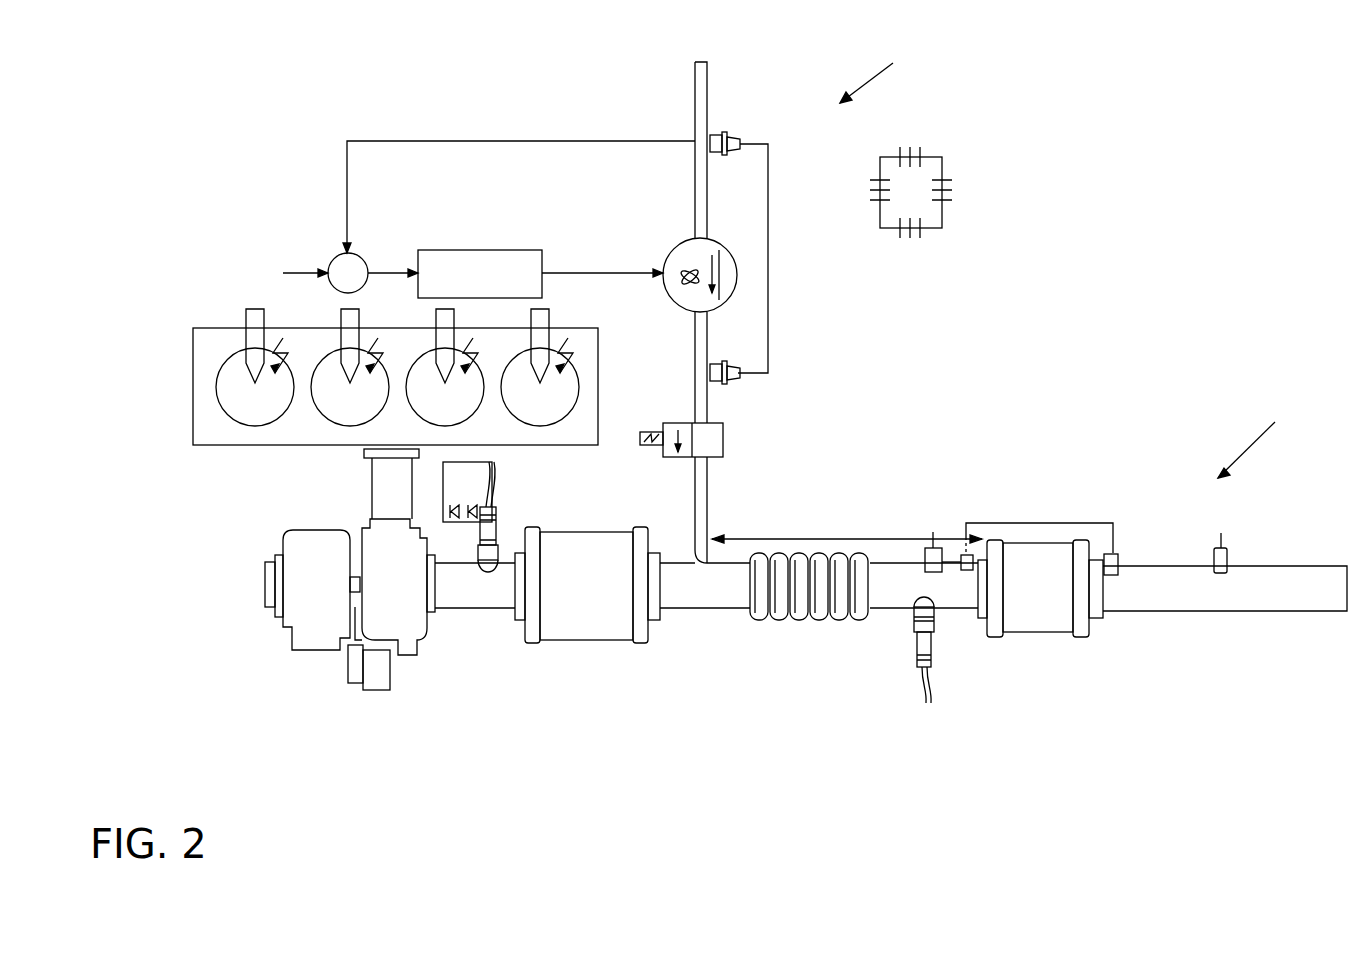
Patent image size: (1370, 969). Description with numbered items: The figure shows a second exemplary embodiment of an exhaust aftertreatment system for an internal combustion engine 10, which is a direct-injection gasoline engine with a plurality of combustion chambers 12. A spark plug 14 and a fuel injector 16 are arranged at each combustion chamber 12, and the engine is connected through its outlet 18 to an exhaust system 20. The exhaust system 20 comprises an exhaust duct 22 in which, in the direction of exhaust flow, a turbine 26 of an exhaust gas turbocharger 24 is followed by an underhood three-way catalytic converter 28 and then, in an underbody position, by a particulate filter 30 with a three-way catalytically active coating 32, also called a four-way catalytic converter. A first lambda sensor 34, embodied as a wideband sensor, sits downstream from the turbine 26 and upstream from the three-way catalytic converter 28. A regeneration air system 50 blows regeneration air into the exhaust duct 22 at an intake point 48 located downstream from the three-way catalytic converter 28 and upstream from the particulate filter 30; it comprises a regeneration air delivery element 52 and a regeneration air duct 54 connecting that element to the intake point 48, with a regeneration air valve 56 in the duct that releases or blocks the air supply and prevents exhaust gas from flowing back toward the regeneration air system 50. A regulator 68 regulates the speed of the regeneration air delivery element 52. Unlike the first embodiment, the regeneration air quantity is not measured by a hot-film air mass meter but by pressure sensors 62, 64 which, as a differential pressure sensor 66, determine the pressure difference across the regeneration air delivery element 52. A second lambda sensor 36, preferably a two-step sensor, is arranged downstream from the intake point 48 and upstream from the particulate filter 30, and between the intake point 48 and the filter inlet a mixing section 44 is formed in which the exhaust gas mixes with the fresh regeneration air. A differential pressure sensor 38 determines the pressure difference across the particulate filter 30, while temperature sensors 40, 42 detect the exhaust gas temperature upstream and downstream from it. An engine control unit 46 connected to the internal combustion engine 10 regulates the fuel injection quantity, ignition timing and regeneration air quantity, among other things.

The internal combustion engine 10 is at (193, 390).
The combustion chamber 12 is at (242, 422).
The spark plug 14 is at (283, 338).
The fuel injector 16 is at (253, 342).
The outlet 18 is at (392, 448).
The exhaust system 20 is at (1225, 506).
The exhaust duct 22 is at (466, 597).
The exhaust gas turbocharger 24 is at (357, 693).
The turbine 26 is at (393, 623).
The three-way catalytic converter 28 is at (582, 620).
The particulate filter 30 is at (1020, 623).
The three-way catalytically active coating 32 is at (1052, 555).
The first lambda sensor 34 is at (495, 532).
The second lambda sensor 36 is at (918, 652).
The differential pressure sensor 38 is at (1117, 555).
The temperature sensor 40 is at (933, 562).
The temperature sensor 42 is at (1227, 552).
The mixing section 44 is at (847, 567).
The engine control unit 46 is at (932, 165).
The intake point 48 is at (705, 563).
The regeneration air system 50 is at (887, 70).
The regeneration air delivery element 52 is at (733, 263).
The regeneration air duct 54 is at (706, 343).
The regeneration air valve 56 is at (723, 443).
The pressure sensor 62 is at (730, 137).
The pressure sensor 64 is at (730, 380).
The differential pressure sensor 66 is at (768, 215).
The regulator 68 is at (482, 265).